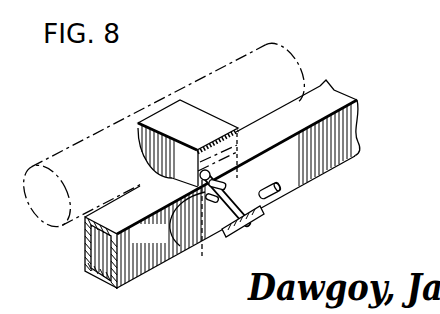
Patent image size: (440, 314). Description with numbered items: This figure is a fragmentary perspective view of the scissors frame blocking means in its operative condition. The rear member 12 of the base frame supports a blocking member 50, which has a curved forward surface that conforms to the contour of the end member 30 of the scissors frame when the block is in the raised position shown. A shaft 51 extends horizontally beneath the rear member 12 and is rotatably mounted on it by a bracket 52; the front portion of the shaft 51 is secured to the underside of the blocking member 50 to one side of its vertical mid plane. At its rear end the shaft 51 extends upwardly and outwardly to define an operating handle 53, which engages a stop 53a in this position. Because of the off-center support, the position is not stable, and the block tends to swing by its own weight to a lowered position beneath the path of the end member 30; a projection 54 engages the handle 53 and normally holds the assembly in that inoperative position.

The rear member 12 is at (335, 102).
The end member 30 is at (112, 125).
The blocking member 50 is at (197, 113).
The shaft 51 is at (201, 228).
The bracket 52 is at (258, 217).
The operating handle 53 is at (240, 193).
The stop 53a is at (169, 219).
The projection 54 is at (290, 187).